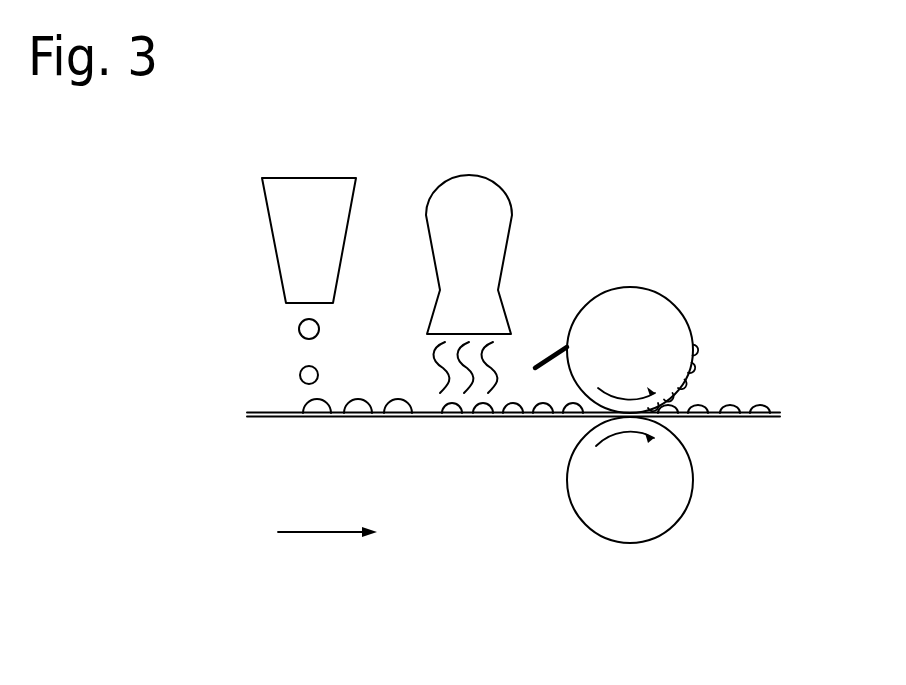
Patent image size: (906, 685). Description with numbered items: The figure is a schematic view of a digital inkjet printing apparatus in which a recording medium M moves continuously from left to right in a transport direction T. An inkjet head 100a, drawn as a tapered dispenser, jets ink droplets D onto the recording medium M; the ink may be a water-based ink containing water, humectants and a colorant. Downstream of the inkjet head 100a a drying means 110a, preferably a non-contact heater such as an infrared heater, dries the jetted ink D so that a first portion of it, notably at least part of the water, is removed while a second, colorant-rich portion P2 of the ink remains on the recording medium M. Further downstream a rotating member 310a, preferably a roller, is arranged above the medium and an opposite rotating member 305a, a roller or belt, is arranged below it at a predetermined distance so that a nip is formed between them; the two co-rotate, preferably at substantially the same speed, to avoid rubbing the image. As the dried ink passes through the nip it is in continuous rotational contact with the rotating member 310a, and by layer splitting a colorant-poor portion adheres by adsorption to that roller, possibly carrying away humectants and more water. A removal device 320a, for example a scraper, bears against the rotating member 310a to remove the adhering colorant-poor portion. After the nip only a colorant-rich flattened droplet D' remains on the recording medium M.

The inkjet head 100a is at (308, 191).
The drying means 110a is at (475, 198).
The removal device 320a is at (547, 358).
The rotating member 310a is at (655, 317).
The opposite rotating member 305a is at (657, 503).
The recording medium M is at (270, 414).
The ink droplet D is at (357, 428).
The colorant-rich portion P2 is at (512, 417).
The colorant-rich flattened droplet D' is at (724, 438).
The transport direction T is at (327, 520).